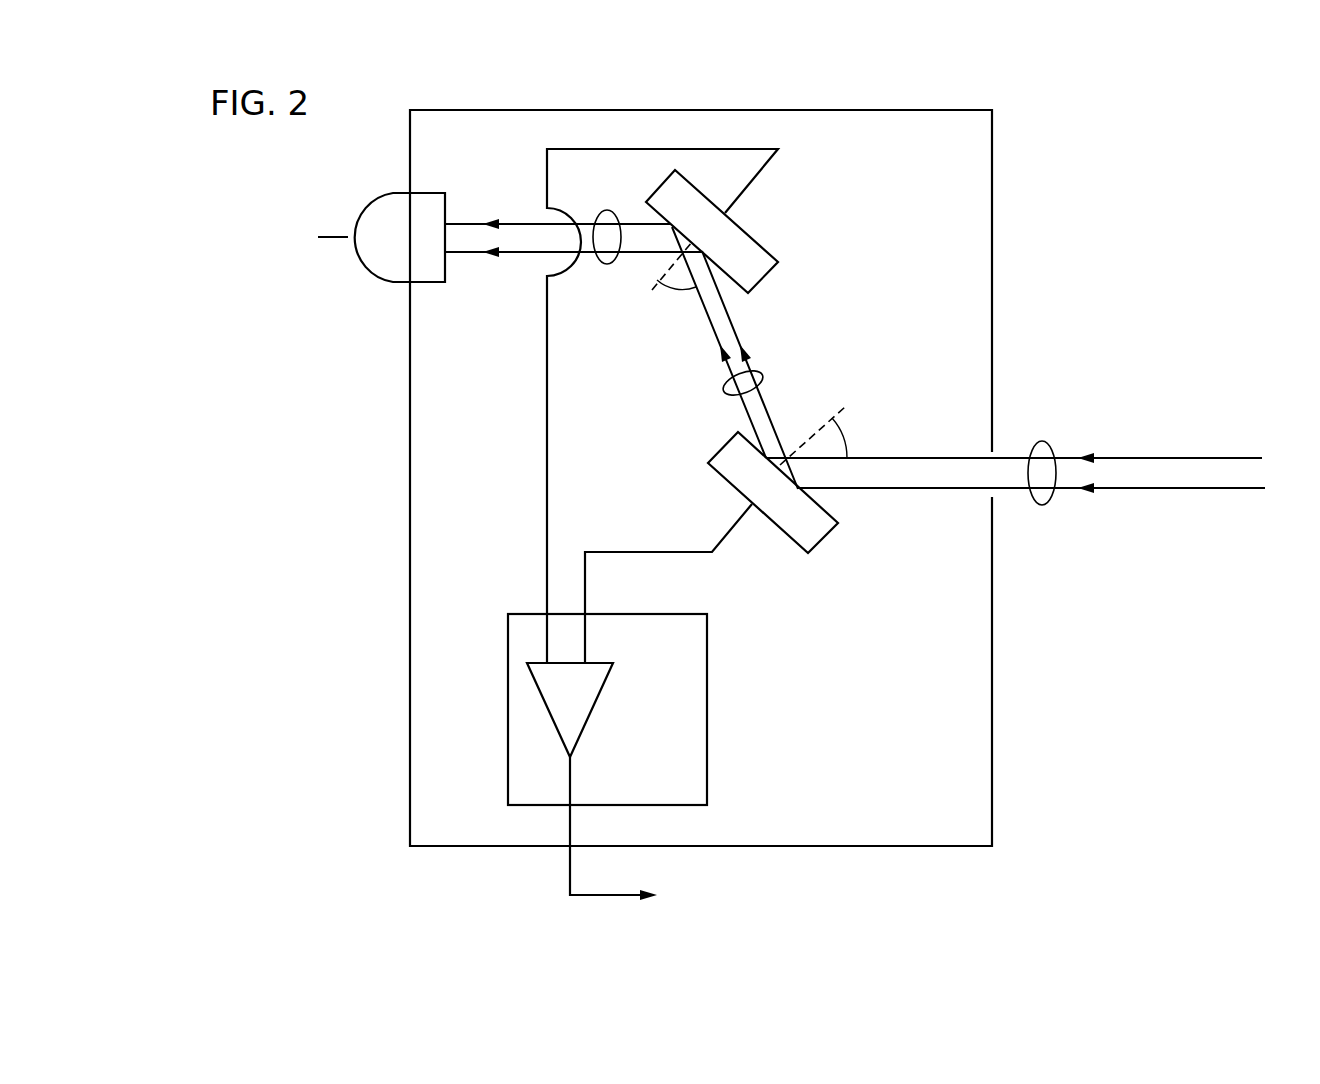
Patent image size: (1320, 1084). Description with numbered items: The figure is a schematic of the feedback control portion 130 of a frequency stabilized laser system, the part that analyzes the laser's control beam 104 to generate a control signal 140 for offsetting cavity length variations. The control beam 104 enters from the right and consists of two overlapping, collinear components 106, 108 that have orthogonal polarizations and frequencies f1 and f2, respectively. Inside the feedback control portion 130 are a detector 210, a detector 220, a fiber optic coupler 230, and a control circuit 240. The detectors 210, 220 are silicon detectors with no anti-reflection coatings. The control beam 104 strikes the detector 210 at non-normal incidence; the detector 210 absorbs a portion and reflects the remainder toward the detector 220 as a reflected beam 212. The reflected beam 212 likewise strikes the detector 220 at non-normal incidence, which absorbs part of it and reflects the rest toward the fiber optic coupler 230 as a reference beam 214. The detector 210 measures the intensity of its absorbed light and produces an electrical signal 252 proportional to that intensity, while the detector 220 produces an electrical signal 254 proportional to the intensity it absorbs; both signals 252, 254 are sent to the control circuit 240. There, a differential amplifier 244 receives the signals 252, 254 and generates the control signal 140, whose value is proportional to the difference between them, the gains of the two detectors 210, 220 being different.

The control beam 104 is at (1042, 441).
The first component of control beam 106 is at (1128, 458).
The second component of control beam 108 is at (1128, 488).
The feedback control portion 130 is at (411, 452).
The control signal 140 is at (570, 872).
The detector 210 is at (807, 550).
The reflected beam 212 is at (765, 378).
The reference beam 214 is at (607, 264).
The detector 220 is at (773, 273).
The fiber optic coupler 230 is at (383, 198).
The control circuit 240 is at (707, 713).
The differential amplifier 244 is at (603, 687).
The electrical signal 252 is at (606, 552).
The electrical signal 254 is at (608, 149).